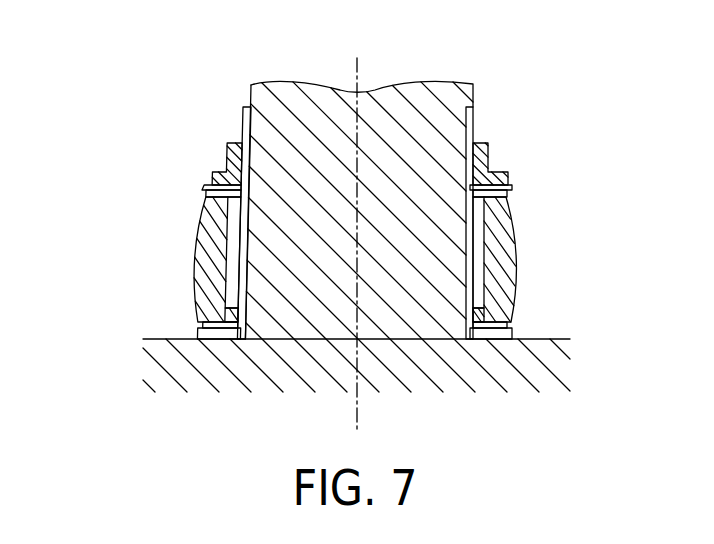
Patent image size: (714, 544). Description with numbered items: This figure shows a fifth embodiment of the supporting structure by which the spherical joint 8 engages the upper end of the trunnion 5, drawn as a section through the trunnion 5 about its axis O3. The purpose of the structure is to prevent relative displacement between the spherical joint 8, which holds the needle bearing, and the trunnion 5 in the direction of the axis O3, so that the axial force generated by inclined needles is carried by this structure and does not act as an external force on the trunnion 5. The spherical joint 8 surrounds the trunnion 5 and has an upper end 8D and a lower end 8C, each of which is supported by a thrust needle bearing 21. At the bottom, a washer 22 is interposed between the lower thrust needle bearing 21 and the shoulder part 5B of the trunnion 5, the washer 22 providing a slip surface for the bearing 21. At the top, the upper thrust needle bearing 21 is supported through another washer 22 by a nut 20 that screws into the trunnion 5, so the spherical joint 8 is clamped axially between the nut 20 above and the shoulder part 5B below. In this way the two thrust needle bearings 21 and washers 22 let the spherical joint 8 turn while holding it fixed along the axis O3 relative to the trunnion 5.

The trunnion 5 is at (305, 97).
The shoulder part of the trunnion 5B is at (156, 341).
The axis O3 is at (359, 78).
The nut 20 is at (236, 146).
The spherical joint 8 is at (202, 238).
The lower end of the spherical joint 8C is at (206, 333).
The upper end of the spherical joint 8D is at (213, 178).
The thrust needle bearing 21 is at (212, 198).
The washer 22 is at (208, 188).